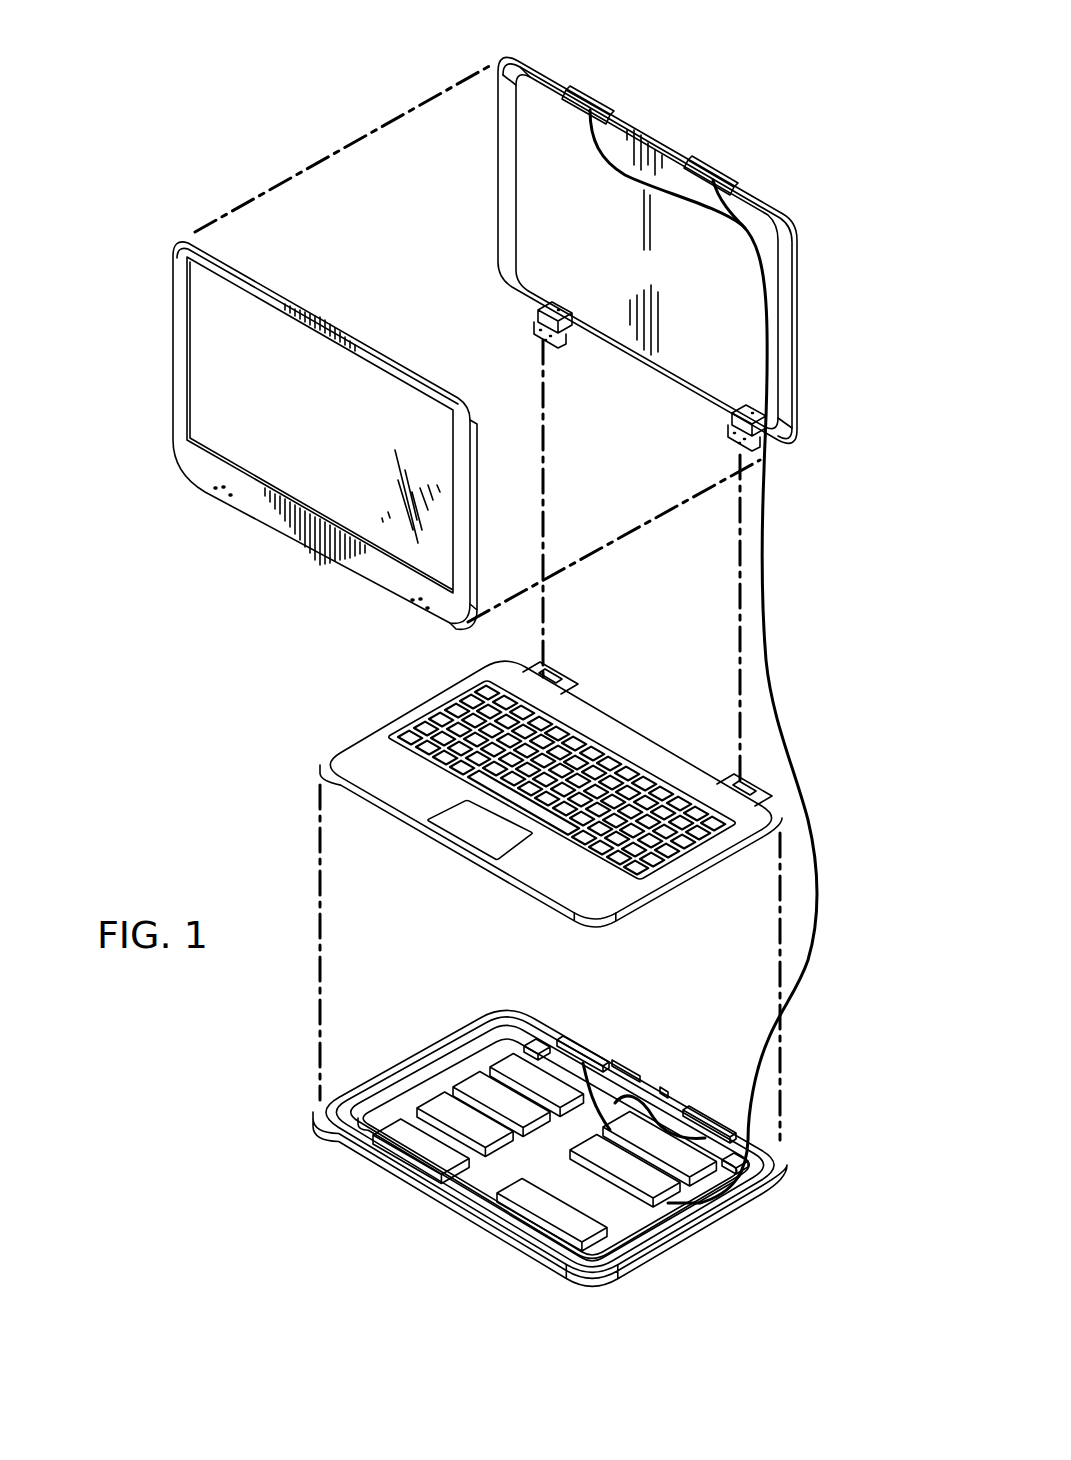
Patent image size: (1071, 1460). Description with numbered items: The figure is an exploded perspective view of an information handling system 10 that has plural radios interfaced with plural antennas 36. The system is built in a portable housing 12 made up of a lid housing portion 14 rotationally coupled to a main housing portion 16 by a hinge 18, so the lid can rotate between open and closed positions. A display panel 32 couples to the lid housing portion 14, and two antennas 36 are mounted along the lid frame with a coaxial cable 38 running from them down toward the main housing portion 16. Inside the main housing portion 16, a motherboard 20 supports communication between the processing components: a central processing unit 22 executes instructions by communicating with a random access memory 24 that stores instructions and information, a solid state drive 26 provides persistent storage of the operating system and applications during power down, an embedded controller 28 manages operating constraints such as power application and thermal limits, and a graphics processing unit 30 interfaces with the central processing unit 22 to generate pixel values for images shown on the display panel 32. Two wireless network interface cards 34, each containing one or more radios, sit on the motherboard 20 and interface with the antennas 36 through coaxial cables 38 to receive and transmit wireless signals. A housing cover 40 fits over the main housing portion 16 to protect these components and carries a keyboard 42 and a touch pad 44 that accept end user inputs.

The information handling system 10 is at (287, 148).
The portable housing 12 is at (532, 1284).
The lid housing portion 14 is at (797, 225).
The main housing portion 16 is at (745, 1205).
The hinge 18 is at (556, 336).
The motherboard 20 is at (483, 1185).
The central processing unit (CPU) 22 is at (500, 1065).
The random access memory (RAM) 24 is at (468, 1083).
The solid state drive (SSD) 26 is at (433, 1105).
The embedded controller 28 is at (398, 1128).
The graphics processing unit (GPU) 30 is at (532, 1193).
The display panel 32 is at (325, 435).
The wireless network interface card (WNIC) 34 is at (650, 1195).
The antenna 36 is at (720, 1110).
The coaxial cable 38 is at (784, 1082).
The housing cover 40 is at (350, 752).
The keyboard 42 is at (640, 775).
The touch pad 44 is at (495, 848).